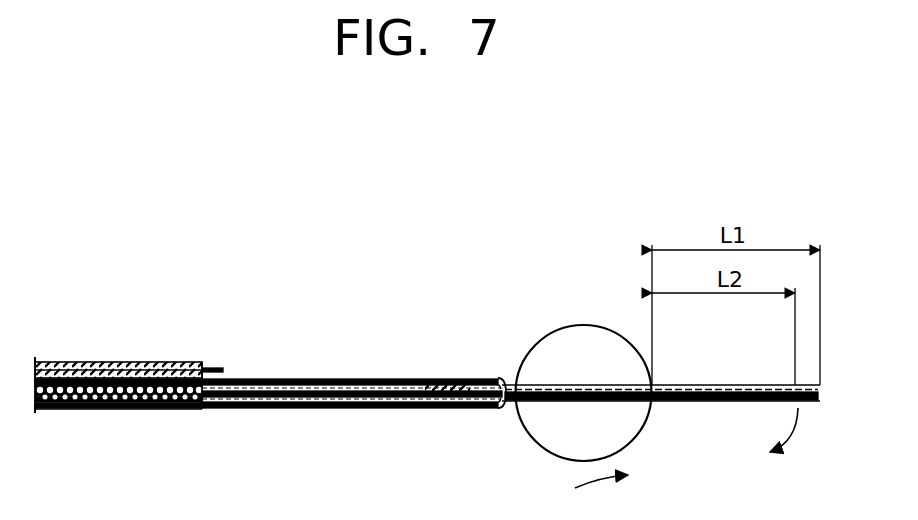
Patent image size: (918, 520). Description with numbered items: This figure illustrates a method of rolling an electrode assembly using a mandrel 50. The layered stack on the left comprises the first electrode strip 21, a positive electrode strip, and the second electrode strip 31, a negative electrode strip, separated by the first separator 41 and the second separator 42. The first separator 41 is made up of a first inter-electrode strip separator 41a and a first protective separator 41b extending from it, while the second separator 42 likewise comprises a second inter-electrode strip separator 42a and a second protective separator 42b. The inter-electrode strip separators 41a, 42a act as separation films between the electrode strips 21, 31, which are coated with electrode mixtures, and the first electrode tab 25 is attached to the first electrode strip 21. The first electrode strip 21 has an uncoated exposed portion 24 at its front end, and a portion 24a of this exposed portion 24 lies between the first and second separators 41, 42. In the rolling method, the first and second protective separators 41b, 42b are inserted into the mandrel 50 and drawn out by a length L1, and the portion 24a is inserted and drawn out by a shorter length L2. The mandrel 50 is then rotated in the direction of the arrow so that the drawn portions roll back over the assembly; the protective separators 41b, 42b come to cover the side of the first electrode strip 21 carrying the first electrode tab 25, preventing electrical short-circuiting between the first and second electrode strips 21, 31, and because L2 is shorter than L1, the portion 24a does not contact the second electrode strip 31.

The first electrode strip 21 is at (68, 410).
The exposed portion 24 is at (326, 410).
The portion of the exposed portion 24a is at (745, 402).
The first electrode tab 25 is at (448, 384).
The second electrode strip 31 is at (68, 361).
The first separator 41 is at (263, 378).
The first inter-electrode strip separator 41a is at (166, 361).
The first protective separator 41b is at (707, 385).
The second separator 42 is at (262, 410).
The second inter-electrode strip separator 42a is at (158, 410).
The second protective separator 42b is at (708, 402).
The mandrel 50 is at (583, 338).